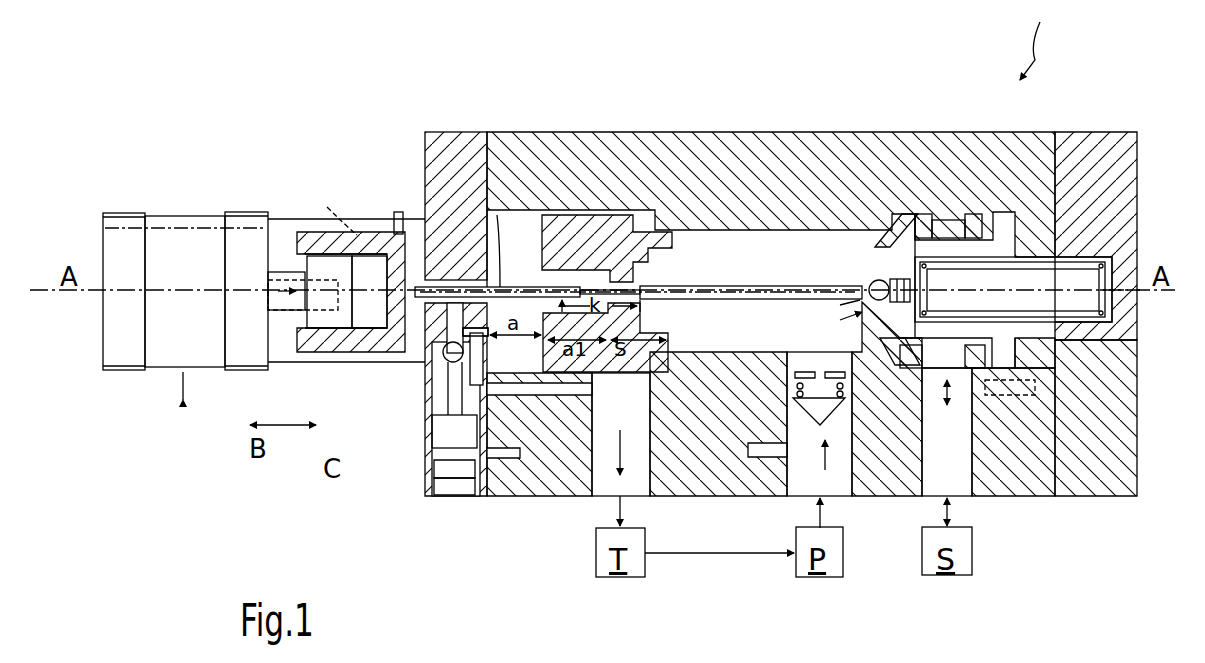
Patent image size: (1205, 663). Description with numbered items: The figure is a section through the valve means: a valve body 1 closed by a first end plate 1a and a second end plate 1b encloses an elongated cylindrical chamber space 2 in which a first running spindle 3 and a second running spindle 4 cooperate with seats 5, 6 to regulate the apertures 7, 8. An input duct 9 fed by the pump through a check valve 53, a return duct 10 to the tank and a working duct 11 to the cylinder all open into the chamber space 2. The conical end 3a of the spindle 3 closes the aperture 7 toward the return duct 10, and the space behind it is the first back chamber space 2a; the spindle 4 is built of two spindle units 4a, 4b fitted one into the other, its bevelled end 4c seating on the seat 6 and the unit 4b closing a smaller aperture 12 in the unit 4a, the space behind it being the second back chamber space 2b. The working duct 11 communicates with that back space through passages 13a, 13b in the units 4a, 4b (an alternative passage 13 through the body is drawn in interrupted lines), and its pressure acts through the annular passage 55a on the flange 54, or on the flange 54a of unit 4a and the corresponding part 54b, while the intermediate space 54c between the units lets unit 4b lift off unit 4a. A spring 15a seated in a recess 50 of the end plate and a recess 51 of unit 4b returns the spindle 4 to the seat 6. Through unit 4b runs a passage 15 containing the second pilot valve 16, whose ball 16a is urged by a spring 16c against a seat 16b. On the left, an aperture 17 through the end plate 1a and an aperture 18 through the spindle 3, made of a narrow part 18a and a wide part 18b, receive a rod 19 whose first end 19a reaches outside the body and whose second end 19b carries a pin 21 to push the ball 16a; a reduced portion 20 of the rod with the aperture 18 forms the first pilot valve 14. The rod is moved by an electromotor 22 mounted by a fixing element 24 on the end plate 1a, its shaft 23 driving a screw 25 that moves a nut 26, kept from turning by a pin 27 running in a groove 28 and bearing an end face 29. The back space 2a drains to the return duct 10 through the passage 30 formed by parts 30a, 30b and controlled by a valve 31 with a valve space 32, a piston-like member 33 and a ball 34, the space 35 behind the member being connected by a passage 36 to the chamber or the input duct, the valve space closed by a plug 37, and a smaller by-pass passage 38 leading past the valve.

The valve body 1 is at (1022, 132).
The first end plate 1a is at (450, 132).
The second end plate 1b is at (1105, 490).
The chamber space 2 is at (768, 132).
The first back chamber space 2a is at (492, 132).
The second back chamber space 2b is at (1115, 142).
The first running spindle 3 is at (555, 132).
The conical end 3a is at (645, 215).
The second running spindle 4 is at (872, 132).
The first spindle unit 4a is at (905, 370).
The second spindle unit 4b is at (1042, 270).
The conical end of second spindle 4c is at (890, 365).
The first seat 5 is at (656, 132).
The second seat 6 is at (842, 132).
The aperture of first seat 7 is at (670, 232).
The aperture of second seat 8 is at (840, 140).
The input duct 9 is at (814, 476).
The return duct 10 is at (636, 416).
The working duct 11 is at (964, 476).
The smaller aperture 12 is at (838, 328).
The passage 13 is at (1040, 400).
The passage in first spindle unit 13a is at (970, 395).
The passage in second spindle unit 13b is at (1040, 370).
The first pilot valve 14 is at (652, 302).
The passage 15 is at (1012, 289).
The spring 15a is at (1112, 290).
The second pilot valve 16 is at (905, 305).
The closing member 16a is at (865, 272).
The seat of second pilot valve 16b is at (905, 214).
The spring of second pilot valve 16c is at (935, 283).
The aperture 17 is at (460, 275).
The aperture 18 is at (590, 140).
The first part of aperture 18a is at (682, 248).
The second part of aperture 18b is at (565, 225).
The rod 19 is at (572, 132).
The first end of rod 19a is at (505, 215).
The second end of rod 19b is at (720, 132).
The reduced portion 20 is at (575, 292).
The pin 21 is at (852, 302).
The electromotor 22 is at (178, 225).
The shaft 23 is at (270, 300).
The fixing element 24 is at (262, 212).
The coil housing 25 is at (292, 228).
The nut 26 is at (283, 352).
The pin 27 is at (394, 216).
The groove 28 is at (332, 205).
The end face 29 is at (416, 258).
The passage 30 is at (520, 372).
The passage part 30a is at (410, 355).
The passage part 30b is at (545, 390).
The valve 31 is at (432, 430).
The valve space 32 is at (480, 398).
The piston-like member 33 is at (462, 496).
The ball 34 is at (440, 360).
The space 35 is at (434, 468).
The passage 36 is at (515, 455).
The plug 37 is at (450, 496).
The by-pass passage 38 is at (483, 346).
The recess 50 is at (1090, 257).
The recess 51 is at (1065, 140).
The check valve 53 is at (825, 415).
The flange 54 is at (1000, 240).
The flange of first spindle unit 54a is at (950, 218).
The seal part 54b is at (1070, 140).
The intermediate space 54c is at (1040, 325).
The annular passage 55a is at (910, 132).